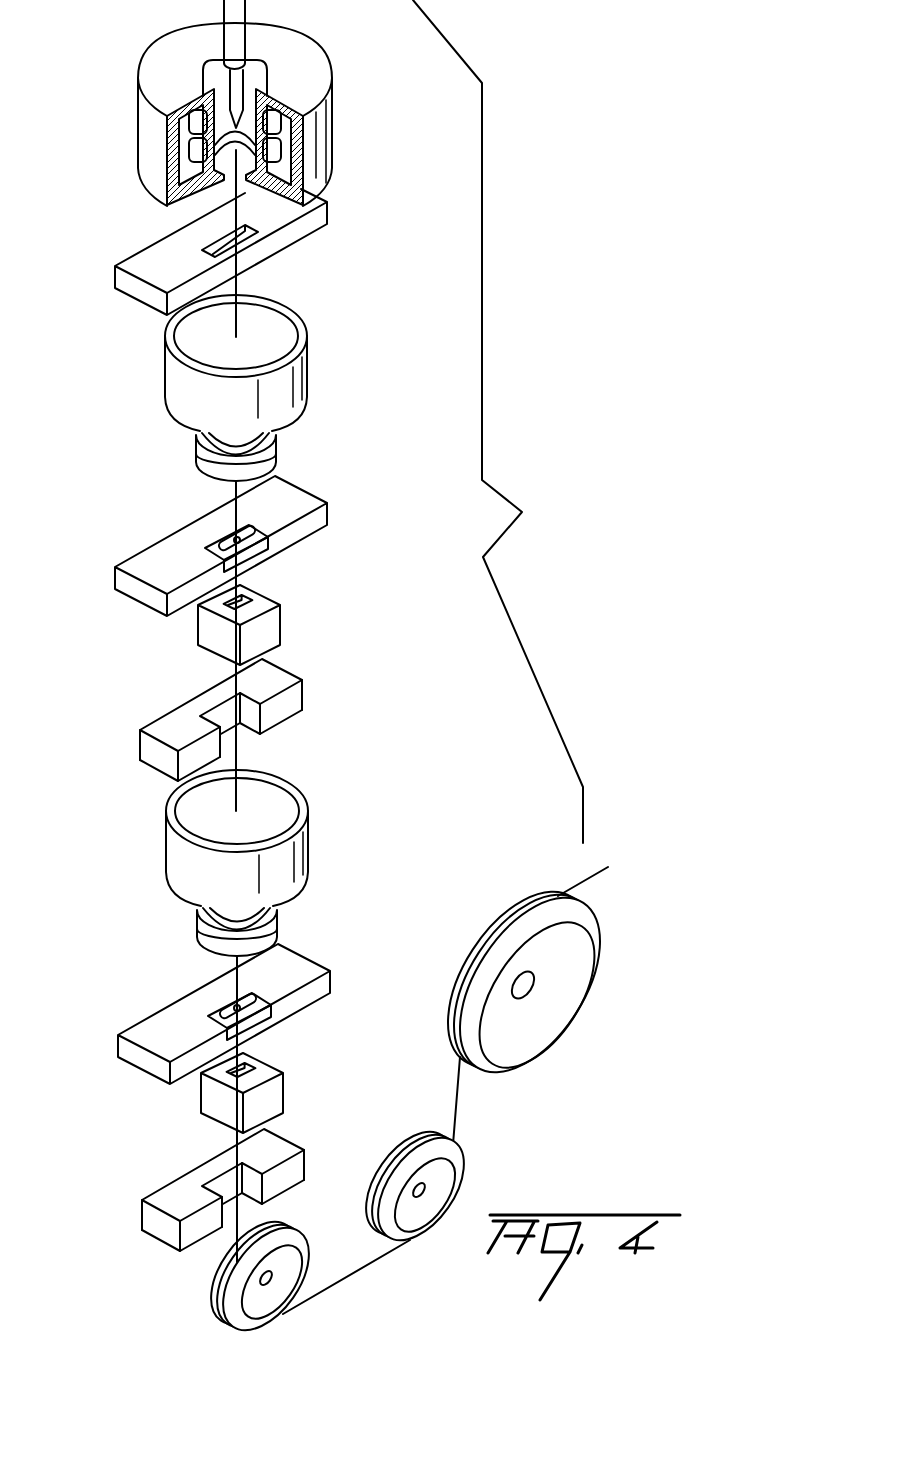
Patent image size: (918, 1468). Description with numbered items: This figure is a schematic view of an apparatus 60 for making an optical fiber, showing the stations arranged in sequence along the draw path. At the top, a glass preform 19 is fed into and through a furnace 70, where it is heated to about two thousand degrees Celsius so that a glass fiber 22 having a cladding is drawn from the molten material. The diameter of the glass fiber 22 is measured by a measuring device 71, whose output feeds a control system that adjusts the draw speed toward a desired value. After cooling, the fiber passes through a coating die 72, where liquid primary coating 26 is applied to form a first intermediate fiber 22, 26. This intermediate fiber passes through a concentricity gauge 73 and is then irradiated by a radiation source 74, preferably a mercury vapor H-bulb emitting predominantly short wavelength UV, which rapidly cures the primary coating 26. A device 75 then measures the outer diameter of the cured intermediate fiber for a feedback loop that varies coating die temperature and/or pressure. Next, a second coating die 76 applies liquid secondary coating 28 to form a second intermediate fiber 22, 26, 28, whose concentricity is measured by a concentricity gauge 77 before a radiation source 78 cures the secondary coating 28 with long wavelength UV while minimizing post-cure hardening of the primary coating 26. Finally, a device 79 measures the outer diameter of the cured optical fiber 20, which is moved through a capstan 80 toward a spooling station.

The glass preform 19 is at (238, 30).
The optical fiber 20 is at (340, 1281).
The glass fiber 22 is at (232, 180).
The primary coating 26 is at (232, 513).
The secondary coating 28 is at (233, 978).
The apparatus 60 is at (498, 421).
The furnace 70 is at (330, 123).
The measuring device 71 is at (153, 262).
The coating die 72 is at (300, 377).
The concentricity gauge 73 is at (298, 497).
The radiation source 74 is at (208, 623).
The device 75 is at (165, 722).
The second coating die 76 is at (300, 847).
The concentricity gauge 77 is at (288, 967).
The radiation source 78 is at (215, 1098).
The device 79 is at (178, 1192).
The capstan 80 is at (563, 1033).